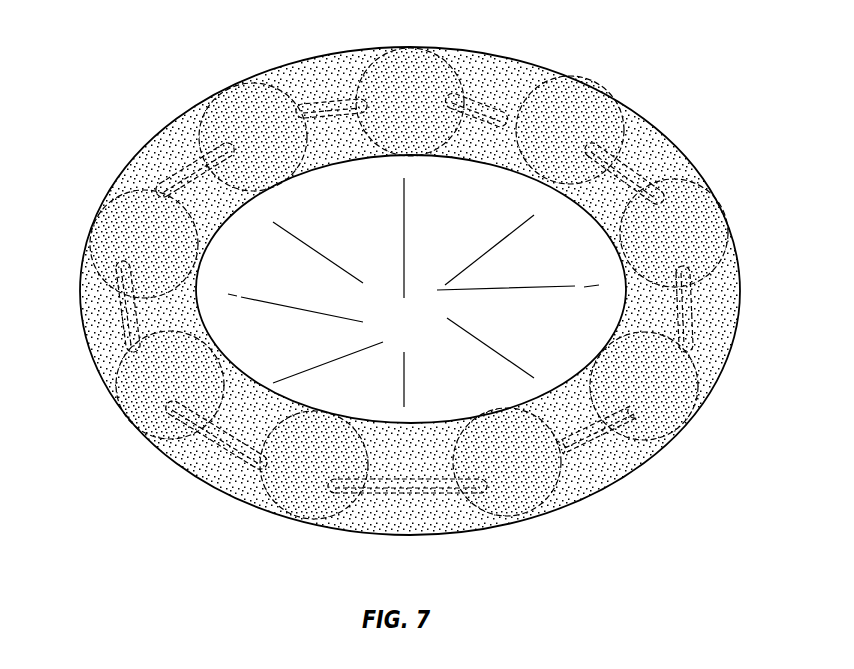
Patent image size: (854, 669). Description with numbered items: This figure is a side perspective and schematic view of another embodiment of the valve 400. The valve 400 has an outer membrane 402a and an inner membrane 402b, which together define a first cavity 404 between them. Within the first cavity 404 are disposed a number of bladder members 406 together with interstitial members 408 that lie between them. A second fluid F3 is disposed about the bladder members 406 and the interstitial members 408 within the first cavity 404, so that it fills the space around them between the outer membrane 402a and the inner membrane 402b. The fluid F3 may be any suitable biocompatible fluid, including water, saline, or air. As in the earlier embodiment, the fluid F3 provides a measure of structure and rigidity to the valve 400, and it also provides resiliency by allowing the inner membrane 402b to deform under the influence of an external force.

The valve 400 is at (106, 72).
The outer membrane 402a is at (540, 61).
The inner membrane 402b is at (606, 233).
The first cavity 404 is at (157, 157).
The bladder members 406 is at (125, 183).
The interstitial members 408 is at (338, 103).
The second fluid F3 is at (614, 462).